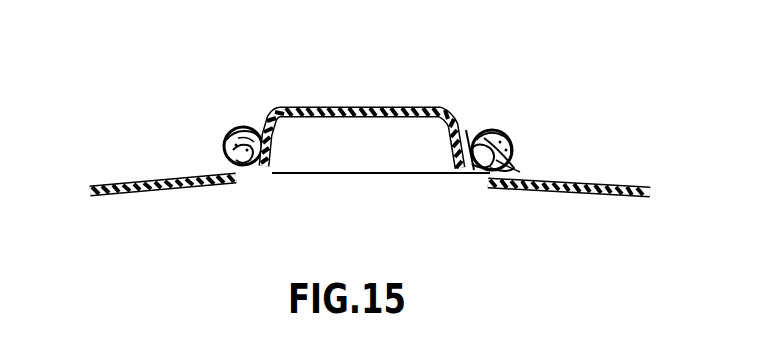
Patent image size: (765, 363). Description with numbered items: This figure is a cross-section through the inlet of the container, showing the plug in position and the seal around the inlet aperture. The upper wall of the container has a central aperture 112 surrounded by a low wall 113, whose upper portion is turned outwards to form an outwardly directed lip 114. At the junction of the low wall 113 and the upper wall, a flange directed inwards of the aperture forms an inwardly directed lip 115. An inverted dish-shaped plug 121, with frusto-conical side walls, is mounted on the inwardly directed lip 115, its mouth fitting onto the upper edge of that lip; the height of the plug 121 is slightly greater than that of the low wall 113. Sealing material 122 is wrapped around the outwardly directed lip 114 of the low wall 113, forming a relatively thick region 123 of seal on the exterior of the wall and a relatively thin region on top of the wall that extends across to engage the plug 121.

The central aperture 112 is at (390, 178).
The low wall 113 is at (565, 213).
The outwardly directed lip 114 is at (548, 43).
The inwardly directed lip 115 is at (468, 178).
The inverted dish-shaped plug 121 is at (362, 48).
The sealing material 122 is at (219, 131).
The relatively thick region of seal 123 is at (226, 163).